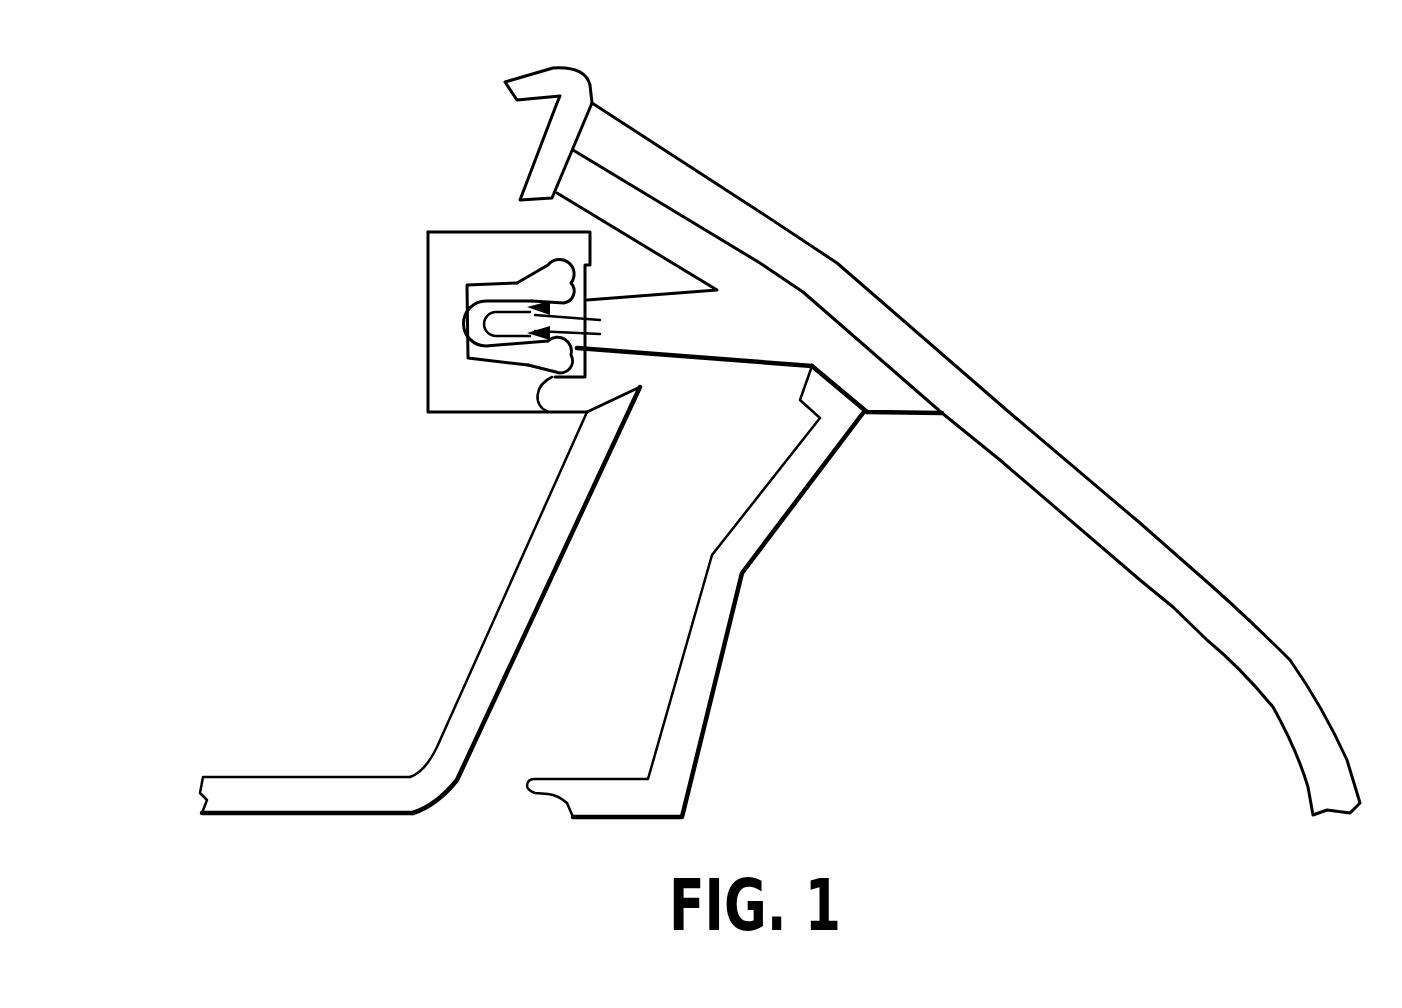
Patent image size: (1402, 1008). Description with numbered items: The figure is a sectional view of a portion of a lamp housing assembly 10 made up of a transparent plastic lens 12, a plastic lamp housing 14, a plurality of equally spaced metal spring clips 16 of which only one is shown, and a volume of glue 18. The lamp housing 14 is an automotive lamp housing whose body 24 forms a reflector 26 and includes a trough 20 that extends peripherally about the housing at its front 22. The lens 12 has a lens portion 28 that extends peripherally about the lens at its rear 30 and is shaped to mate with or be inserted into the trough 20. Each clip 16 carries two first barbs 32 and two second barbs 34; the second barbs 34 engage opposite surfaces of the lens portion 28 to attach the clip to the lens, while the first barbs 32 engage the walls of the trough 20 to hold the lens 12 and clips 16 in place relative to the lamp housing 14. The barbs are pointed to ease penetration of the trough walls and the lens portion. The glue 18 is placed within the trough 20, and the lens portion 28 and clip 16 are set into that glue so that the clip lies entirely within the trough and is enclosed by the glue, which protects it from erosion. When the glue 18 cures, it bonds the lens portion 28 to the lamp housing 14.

The lamp housing assembly 10 is at (932, 441).
The transparent plastic lens 12 is at (1172, 578).
The plastic lamp housing 14 is at (414, 637).
The metal spring clip 16 is at (526, 323).
The volume of glue 18 is at (586, 358).
The trough 20 is at (602, 277).
The front 22 is at (734, 577).
The body 24 is at (482, 683).
The reflector 26 is at (337, 817).
The lens portion 28 is at (735, 338).
The rear 30 is at (771, 434).
The first barbs 32 is at (538, 262).
The second barbs 34 is at (580, 323).